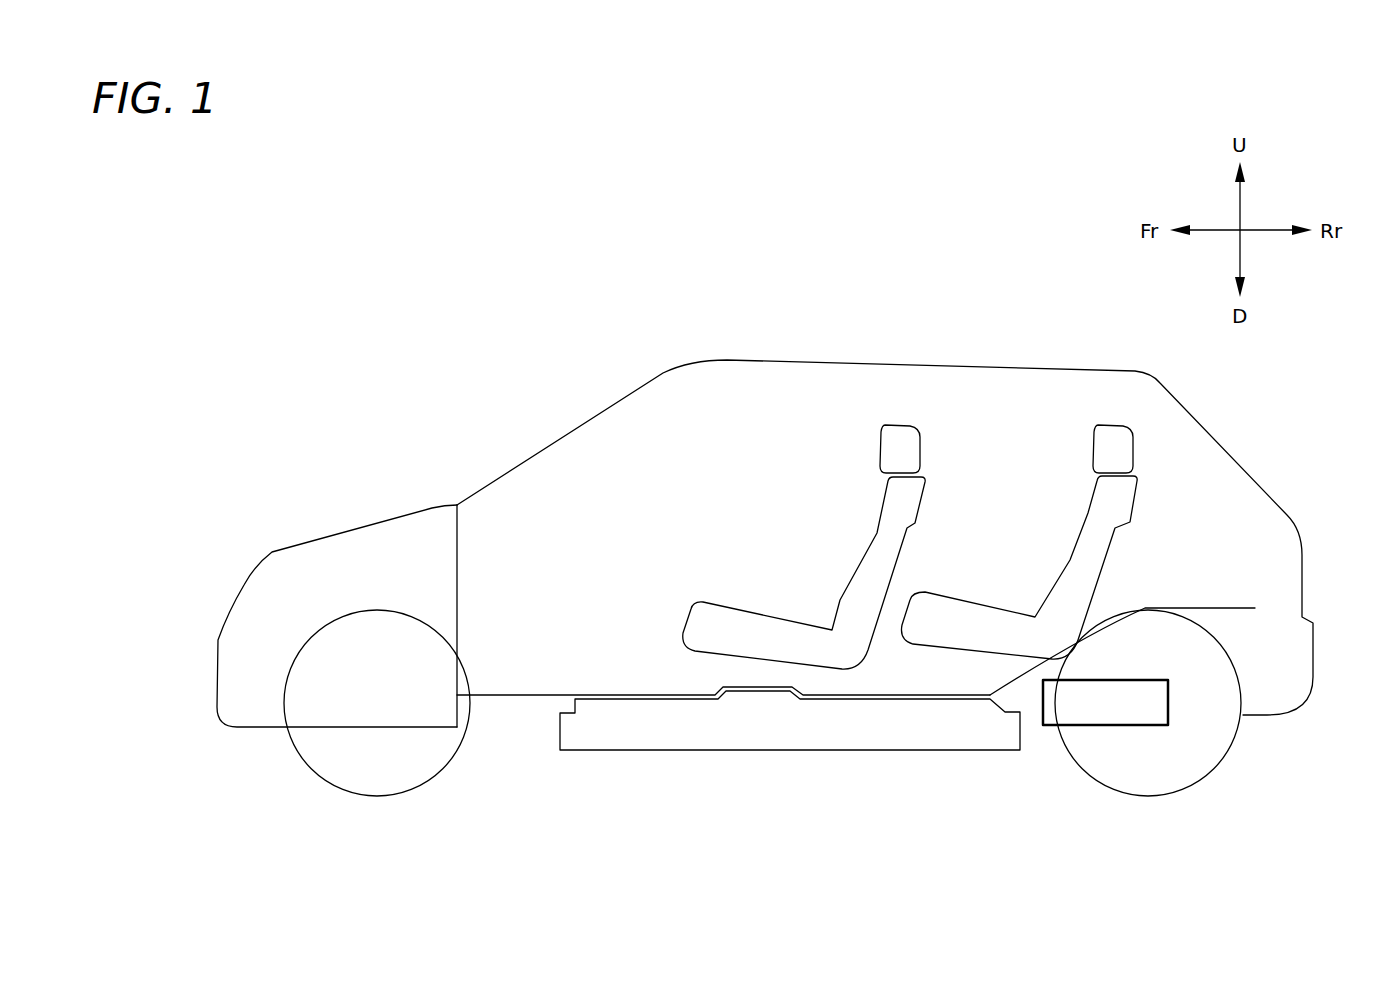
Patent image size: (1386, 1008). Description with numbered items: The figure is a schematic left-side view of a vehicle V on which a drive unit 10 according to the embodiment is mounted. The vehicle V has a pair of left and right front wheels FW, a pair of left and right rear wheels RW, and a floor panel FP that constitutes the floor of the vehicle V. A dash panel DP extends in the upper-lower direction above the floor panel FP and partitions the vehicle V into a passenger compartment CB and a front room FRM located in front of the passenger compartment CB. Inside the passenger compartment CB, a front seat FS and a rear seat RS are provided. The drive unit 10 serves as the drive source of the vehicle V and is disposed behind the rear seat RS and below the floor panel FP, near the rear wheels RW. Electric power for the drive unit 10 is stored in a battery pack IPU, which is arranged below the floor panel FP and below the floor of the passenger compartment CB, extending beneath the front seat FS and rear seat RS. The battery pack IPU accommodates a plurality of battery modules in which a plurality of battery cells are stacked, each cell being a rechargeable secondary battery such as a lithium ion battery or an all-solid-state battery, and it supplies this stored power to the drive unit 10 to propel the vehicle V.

The vehicle V is at (516, 343).
The passenger compartment CB is at (788, 429).
The front room FRM is at (272, 575).
The dash panel DP is at (455, 567).
The floor panel FP is at (558, 694).
The battery pack IPU is at (592, 760).
The front wheel FW is at (440, 772).
The rear wheel RW is at (1215, 775).
The drive unit 10 is at (1085, 715).
The front seat FS is at (885, 518).
The rear seat RS is at (1100, 520).